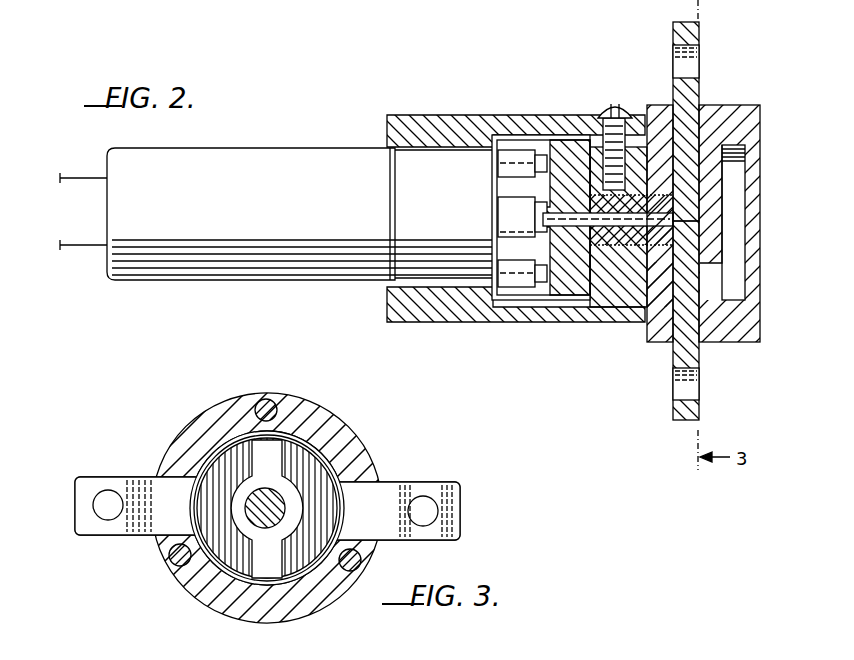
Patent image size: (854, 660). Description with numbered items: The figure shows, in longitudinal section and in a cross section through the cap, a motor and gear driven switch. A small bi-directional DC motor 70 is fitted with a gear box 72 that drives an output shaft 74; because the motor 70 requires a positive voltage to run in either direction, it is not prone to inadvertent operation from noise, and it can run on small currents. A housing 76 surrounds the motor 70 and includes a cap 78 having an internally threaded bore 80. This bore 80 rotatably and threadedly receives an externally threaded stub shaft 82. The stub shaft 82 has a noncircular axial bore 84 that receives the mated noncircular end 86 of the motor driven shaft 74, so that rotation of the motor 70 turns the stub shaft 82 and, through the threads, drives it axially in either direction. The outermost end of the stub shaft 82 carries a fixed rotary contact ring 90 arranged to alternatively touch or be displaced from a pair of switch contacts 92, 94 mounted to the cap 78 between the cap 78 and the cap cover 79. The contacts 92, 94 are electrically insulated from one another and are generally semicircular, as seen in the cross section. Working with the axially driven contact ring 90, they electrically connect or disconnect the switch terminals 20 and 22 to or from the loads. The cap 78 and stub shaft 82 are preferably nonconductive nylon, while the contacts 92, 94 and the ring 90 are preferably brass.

In FIG. 2, the switch terminal 20 is at (698, 66).
In FIG. 3, the switch terminal 20 is at (110, 490).
In FIG. 2, the switch terminal 22 is at (700, 388).
In FIG. 3, the switch terminal 22 is at (430, 482).
In FIG. 2, the bi-directional DC motor 70 is at (278, 158).
In FIG. 2, the gear box 72 is at (424, 150).
In FIG. 2, the output shaft 74 is at (548, 232).
In FIG. 2, the housing 76 is at (500, 125).
In FIG. 2, the cap 78 is at (656, 106).
In FIG. 2, the cap cover 79 is at (760, 107).
In FIG. 3, the cap cover 79 is at (232, 403).
In FIG. 2, the internally threaded bore 80 is at (662, 260).
In FIG. 2, the externally threaded stub shaft 82 is at (638, 196).
In FIG. 3, the externally threaded stub shaft 82 is at (285, 508).
In FIG. 2, the noncircular axial bore 84 is at (640, 219).
In FIG. 2, the noncircular end 86 is at (588, 255).
In FIG. 2, the rotary contact ring 90 is at (724, 181).
In FIG. 3, the rotary contact ring 90 is at (290, 407).
In FIG. 2, the switch contact 92 is at (697, 157).
In FIG. 3, the switch contact 92 is at (196, 478).
In FIG. 2, the switch contact 94 is at (665, 290).
In FIG. 3, the switch contact 94 is at (318, 440).